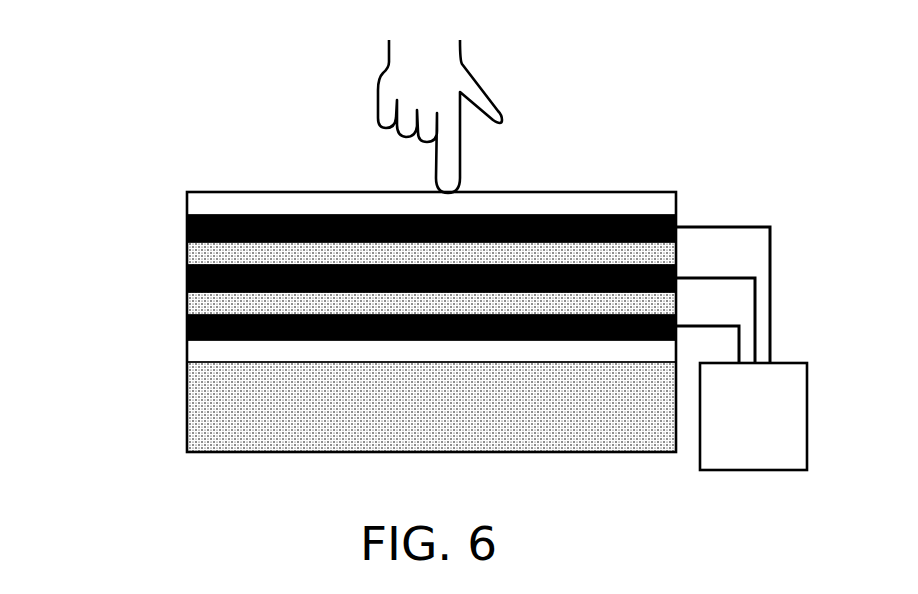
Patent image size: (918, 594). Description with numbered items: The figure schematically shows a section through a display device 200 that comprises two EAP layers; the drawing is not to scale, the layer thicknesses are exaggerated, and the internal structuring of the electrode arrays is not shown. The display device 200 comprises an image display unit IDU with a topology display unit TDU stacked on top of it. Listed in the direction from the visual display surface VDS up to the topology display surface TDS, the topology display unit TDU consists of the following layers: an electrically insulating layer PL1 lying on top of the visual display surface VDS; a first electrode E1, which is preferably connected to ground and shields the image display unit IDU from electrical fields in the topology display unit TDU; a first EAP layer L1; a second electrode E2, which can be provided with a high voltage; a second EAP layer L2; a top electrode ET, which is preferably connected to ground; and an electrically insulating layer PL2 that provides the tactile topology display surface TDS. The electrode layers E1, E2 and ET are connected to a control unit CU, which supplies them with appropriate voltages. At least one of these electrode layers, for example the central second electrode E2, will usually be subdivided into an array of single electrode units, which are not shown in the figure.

The display device 200 is at (452, 500).
The topology display surface TDS is at (343, 172).
The topology display unit TDU is at (93, 177).
The electrically insulating layer PL2 is at (188, 206).
The top electrode ET is at (188, 229).
The second EAP layer L2 is at (188, 254).
The second electrode E2 is at (188, 277).
The first EAP layer L1 is at (188, 303).
The first electrode E1 is at (188, 327).
The electrically insulating layer PL1 is at (188, 351).
The image display unit IDU is at (187, 403).
The visual display surface VDS is at (535, 372).
The control unit CU is at (771, 425).